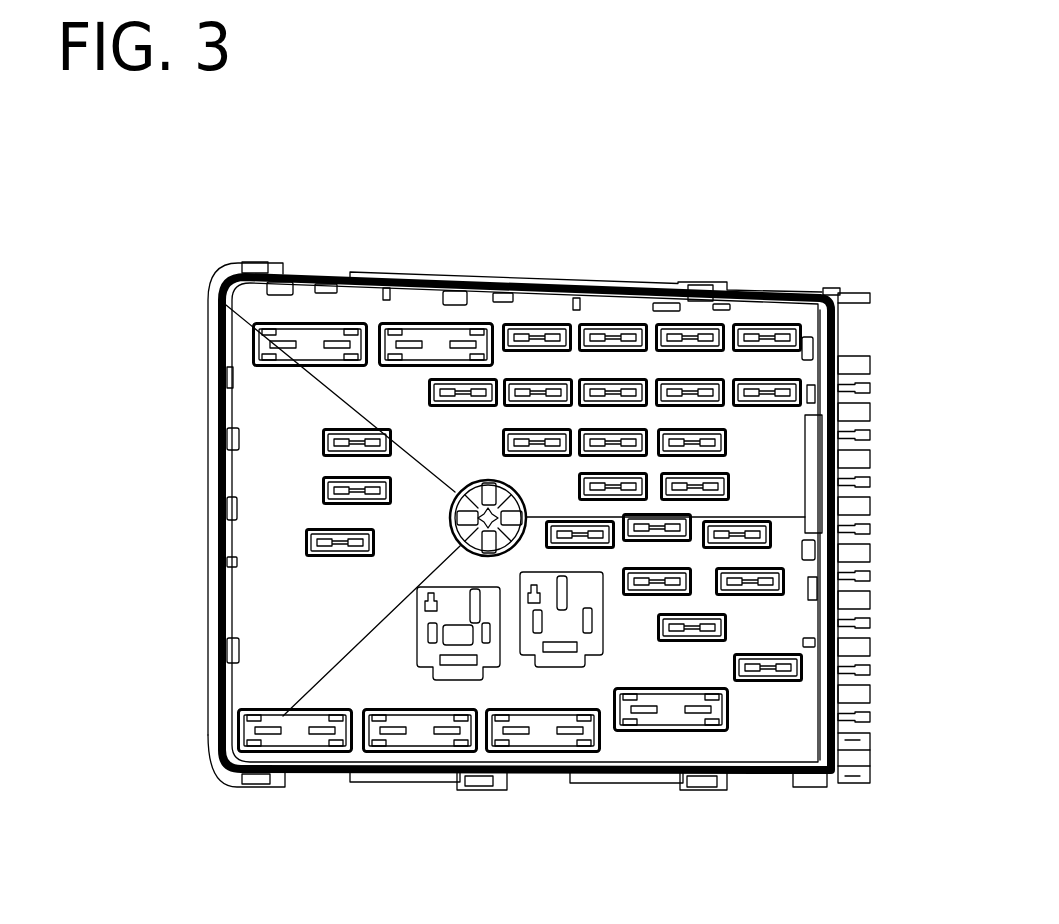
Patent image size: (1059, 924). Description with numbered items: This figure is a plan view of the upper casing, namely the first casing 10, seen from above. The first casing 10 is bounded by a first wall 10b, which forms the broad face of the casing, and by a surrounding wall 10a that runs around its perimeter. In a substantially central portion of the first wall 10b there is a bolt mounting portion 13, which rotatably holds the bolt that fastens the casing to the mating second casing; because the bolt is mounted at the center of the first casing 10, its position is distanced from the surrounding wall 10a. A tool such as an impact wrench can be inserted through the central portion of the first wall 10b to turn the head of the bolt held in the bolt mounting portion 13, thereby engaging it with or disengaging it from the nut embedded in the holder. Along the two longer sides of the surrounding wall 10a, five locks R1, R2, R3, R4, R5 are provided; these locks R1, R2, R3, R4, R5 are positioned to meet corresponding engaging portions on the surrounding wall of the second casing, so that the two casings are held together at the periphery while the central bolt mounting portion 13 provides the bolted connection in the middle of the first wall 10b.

The first casing 10 is at (494, 515).
The surrounding wall 10a is at (517, 271).
The first wall 10b is at (250, 468).
The bolt mounting portion 13 is at (463, 531).
The lock R1 is at (262, 262).
The lock R2 is at (705, 283).
The lock R3 is at (256, 785).
The lock R4 is at (480, 788).
The lock R5 is at (702, 788).